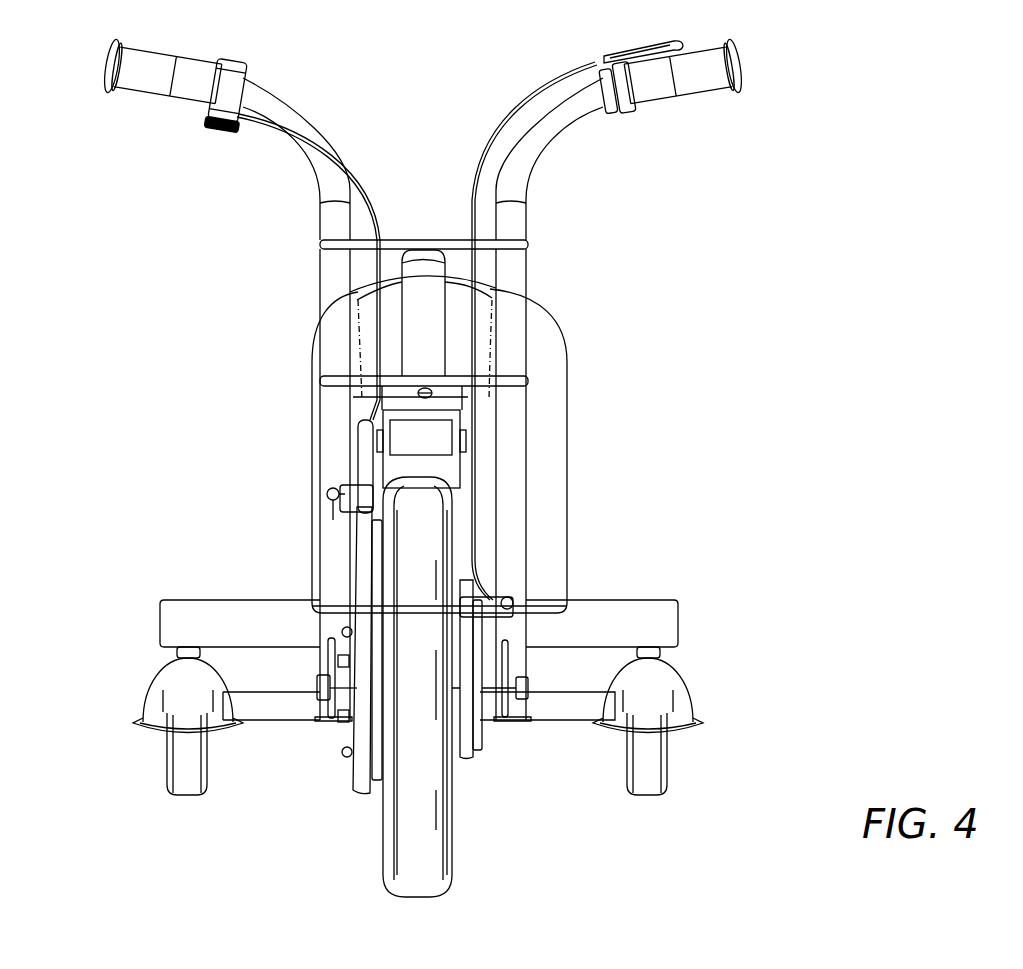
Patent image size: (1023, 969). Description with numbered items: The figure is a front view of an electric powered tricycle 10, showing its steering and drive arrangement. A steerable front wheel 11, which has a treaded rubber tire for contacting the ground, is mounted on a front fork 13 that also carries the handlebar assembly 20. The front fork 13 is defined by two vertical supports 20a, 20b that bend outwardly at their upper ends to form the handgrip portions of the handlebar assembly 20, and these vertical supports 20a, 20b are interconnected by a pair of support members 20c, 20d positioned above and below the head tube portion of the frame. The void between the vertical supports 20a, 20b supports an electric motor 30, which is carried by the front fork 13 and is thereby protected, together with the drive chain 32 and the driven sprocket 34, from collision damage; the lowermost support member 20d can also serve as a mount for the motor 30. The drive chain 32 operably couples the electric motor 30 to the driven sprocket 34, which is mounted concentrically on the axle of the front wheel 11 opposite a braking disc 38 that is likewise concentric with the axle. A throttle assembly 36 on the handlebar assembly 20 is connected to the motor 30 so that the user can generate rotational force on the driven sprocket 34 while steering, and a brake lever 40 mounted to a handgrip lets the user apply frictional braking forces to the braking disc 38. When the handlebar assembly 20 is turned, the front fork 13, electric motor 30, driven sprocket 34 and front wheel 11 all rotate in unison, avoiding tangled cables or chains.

The tricycle 10 is at (838, 266).
The front wheel 11 is at (420, 805).
The front fork 13 is at (525, 377).
The handlebar assembly 20 is at (272, 82).
The vertical support 20a is at (338, 305).
The vertical support 20b is at (520, 278).
The support member 20c is at (424, 228).
The support member 20d is at (378, 423).
The electric motor 30 is at (450, 437).
The drive chain 32 is at (360, 562).
The driven sprocket 34 is at (350, 768).
The throttle assembly 36 is at (238, 60).
The braking disc 38 is at (478, 745).
The brake lever 40 is at (615, 55).